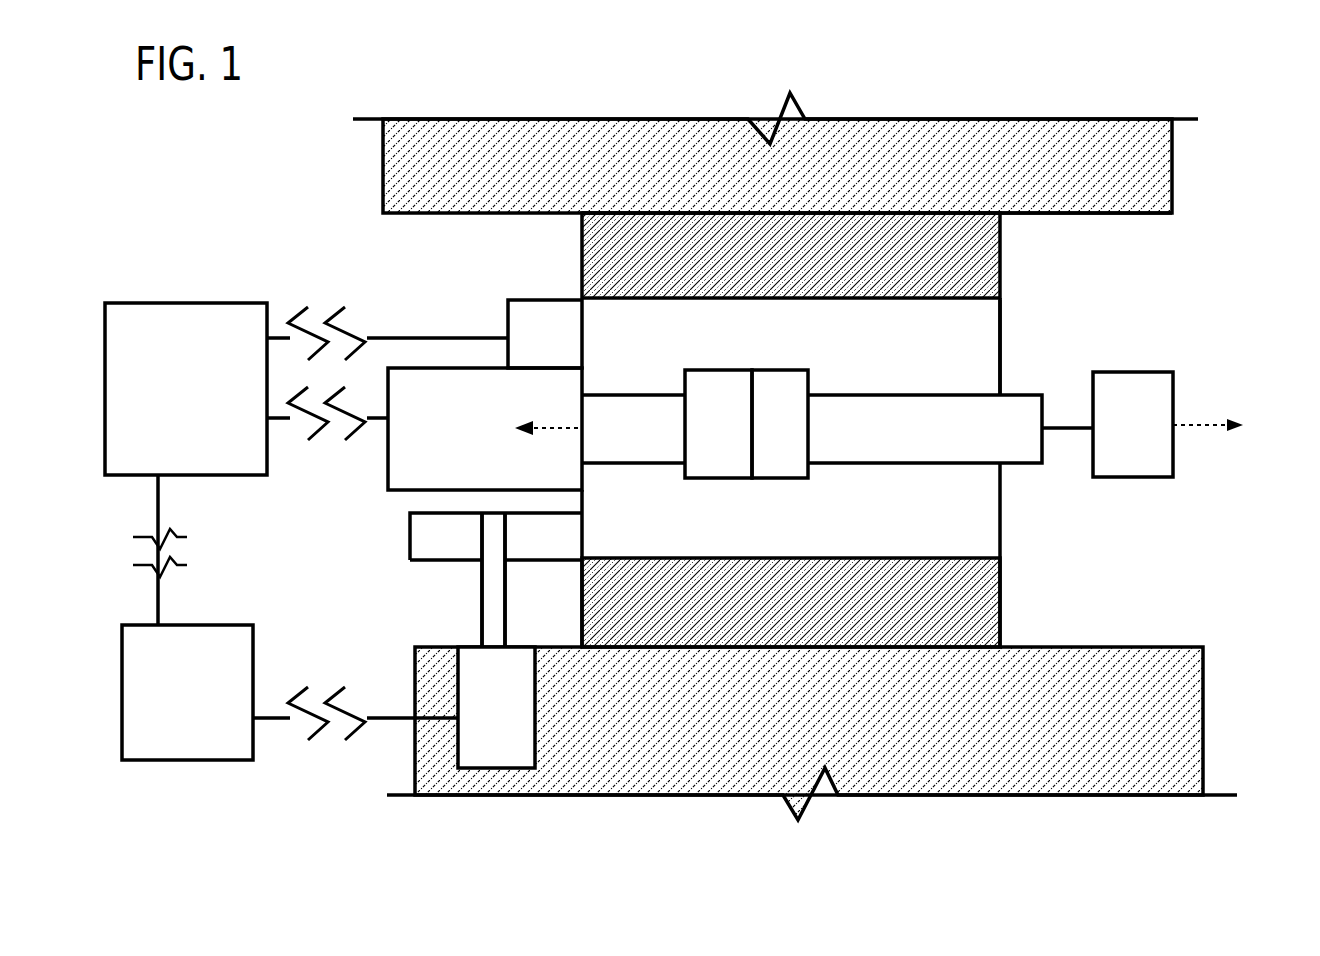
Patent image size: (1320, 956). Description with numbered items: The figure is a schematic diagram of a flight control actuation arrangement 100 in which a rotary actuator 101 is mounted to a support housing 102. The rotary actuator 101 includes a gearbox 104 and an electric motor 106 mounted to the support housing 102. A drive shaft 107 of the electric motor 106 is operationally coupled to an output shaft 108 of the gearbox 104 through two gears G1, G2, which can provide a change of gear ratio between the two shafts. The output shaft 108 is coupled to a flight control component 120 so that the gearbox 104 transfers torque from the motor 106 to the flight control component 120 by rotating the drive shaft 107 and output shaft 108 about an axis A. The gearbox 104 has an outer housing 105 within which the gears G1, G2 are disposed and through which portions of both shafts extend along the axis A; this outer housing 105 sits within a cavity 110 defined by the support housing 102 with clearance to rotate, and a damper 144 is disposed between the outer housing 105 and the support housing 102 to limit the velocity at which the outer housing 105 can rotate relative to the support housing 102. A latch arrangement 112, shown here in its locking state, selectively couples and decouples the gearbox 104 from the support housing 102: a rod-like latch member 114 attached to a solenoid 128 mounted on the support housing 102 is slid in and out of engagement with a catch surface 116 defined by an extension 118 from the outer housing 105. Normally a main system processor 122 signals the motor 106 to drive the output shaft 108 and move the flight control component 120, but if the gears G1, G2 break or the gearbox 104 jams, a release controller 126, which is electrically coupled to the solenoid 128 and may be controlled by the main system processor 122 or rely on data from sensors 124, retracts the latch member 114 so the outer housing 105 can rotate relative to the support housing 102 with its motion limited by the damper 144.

The flight control actuation arrangement 100 is at (1187, 542).
The rotary actuator 101 is at (1016, 504).
The support housing 102 is at (405, 155).
The gearbox 104 is at (855, 430).
The outer housing 105 is at (1000, 337).
The electric motor 106 is at (485, 429).
The drive shaft 107 is at (633, 429).
The output shaft 108 is at (950, 429).
The cavity 110 is at (1072, 213).
The latch arrangement 112 is at (366, 570).
The latch member 114 is at (480, 627).
The catch surface 116 is at (508, 563).
The extension 118 is at (440, 532).
The flight control component 120 is at (1133, 424).
The main system processor 122 is at (306, 464).
The sensors 124 is at (545, 334).
The release controller 126 is at (290, 692).
The solenoid 128 is at (809, 733).
The damper 144 is at (964, 258).
The gear G1 is at (718, 424).
The gear G2 is at (780, 424).
The axis A is at (1192, 427).